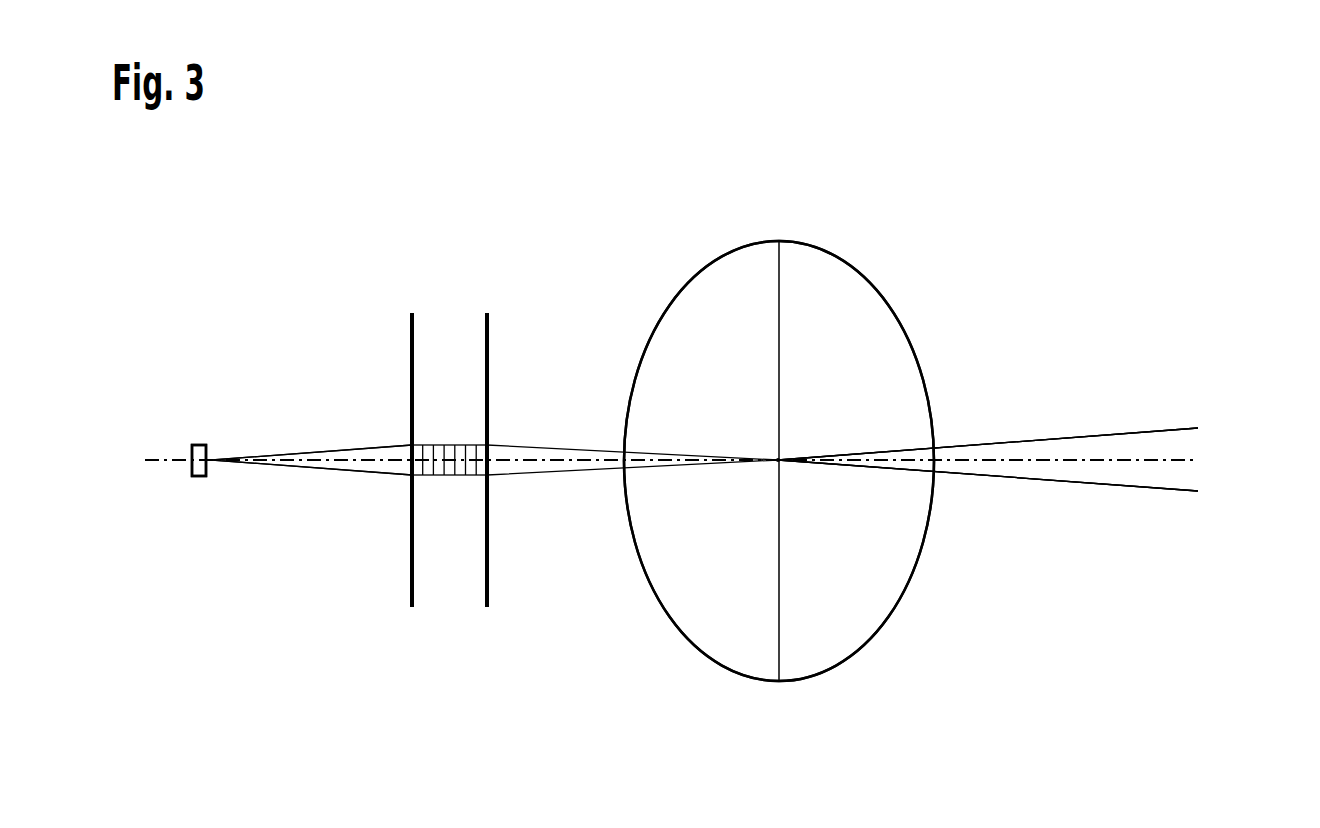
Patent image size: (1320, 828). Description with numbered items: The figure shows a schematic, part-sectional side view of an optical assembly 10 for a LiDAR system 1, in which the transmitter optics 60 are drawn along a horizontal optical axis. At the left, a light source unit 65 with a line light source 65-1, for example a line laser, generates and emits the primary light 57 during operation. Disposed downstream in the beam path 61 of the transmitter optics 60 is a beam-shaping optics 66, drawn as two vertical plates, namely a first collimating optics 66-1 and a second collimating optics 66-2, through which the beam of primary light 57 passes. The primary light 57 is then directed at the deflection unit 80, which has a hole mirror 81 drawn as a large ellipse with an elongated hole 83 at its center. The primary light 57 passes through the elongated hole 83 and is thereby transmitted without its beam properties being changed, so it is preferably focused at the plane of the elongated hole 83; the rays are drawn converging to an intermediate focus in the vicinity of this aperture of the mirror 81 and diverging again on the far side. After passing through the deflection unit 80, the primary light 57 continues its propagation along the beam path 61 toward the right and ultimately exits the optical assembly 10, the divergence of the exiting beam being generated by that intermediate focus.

The LiDAR system 1 is at (302, 258).
The optical assembly 10 is at (312, 460).
The transmitter optics 60 is at (988, 459).
The light source unit 65 is at (197, 445).
The line light source 65-1 is at (199, 460).
The beam-shaping optics 66 is at (465, 215).
The first collimating optics 66-1 is at (412, 328).
The second collimating optics 66-2 is at (487, 328).
The deflection unit 80 is at (683, 283).
The hole mirror 81 is at (779, 461).
The elongated hole 83 is at (775, 458).
The primary light 57 is at (1025, 440).
The beam path 61 is at (1218, 385).